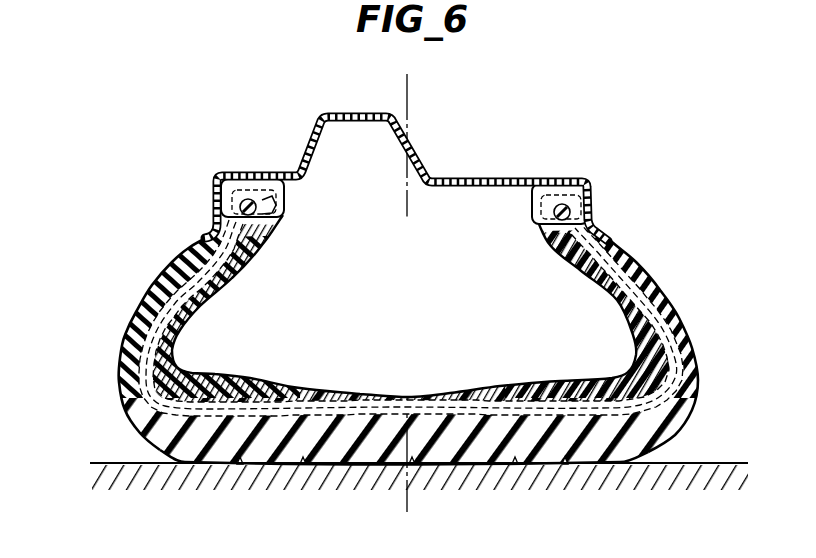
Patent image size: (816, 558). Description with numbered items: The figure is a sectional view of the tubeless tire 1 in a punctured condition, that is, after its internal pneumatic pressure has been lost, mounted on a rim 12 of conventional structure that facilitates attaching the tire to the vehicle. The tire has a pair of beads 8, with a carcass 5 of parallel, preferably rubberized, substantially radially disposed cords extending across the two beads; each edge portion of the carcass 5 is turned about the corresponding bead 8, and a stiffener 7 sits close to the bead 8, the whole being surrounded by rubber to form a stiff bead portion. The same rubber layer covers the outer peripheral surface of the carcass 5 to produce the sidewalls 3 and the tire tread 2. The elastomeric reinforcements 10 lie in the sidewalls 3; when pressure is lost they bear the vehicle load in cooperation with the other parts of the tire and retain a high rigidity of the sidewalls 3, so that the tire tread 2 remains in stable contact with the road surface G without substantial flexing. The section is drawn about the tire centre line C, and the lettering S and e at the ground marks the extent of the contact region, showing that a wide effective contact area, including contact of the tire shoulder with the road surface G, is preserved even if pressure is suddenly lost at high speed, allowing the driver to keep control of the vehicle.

The tubeless tire 1 is at (395, 370).
The tire tread 2 is at (353, 458).
The sidewalls 3 is at (120, 356).
The carcass 5 is at (668, 299).
The stiffener 7 is at (284, 234).
The bead 8 is at (228, 187).
The reinforcements 10 is at (195, 374).
The rim 12 is at (430, 172).
The center line C is at (407, 295).
The road surface G is at (455, 477).
The contact edge S is at (200, 464).
The tread edge e is at (240, 464).